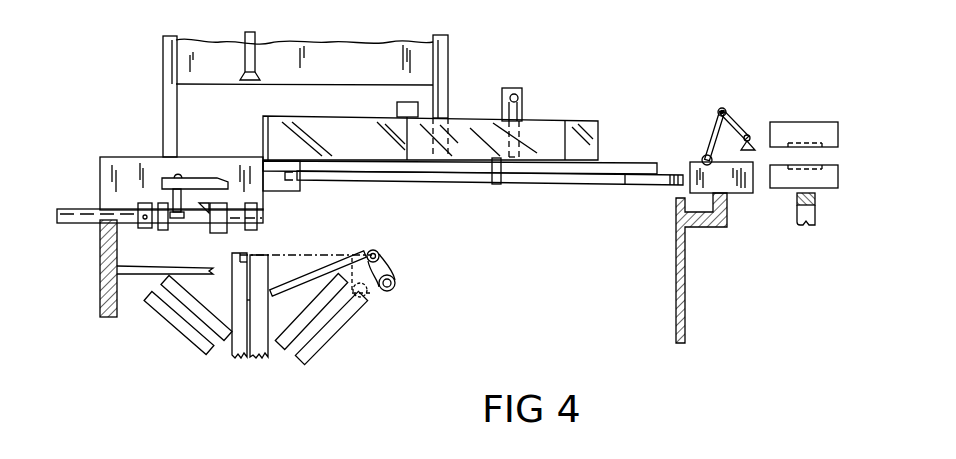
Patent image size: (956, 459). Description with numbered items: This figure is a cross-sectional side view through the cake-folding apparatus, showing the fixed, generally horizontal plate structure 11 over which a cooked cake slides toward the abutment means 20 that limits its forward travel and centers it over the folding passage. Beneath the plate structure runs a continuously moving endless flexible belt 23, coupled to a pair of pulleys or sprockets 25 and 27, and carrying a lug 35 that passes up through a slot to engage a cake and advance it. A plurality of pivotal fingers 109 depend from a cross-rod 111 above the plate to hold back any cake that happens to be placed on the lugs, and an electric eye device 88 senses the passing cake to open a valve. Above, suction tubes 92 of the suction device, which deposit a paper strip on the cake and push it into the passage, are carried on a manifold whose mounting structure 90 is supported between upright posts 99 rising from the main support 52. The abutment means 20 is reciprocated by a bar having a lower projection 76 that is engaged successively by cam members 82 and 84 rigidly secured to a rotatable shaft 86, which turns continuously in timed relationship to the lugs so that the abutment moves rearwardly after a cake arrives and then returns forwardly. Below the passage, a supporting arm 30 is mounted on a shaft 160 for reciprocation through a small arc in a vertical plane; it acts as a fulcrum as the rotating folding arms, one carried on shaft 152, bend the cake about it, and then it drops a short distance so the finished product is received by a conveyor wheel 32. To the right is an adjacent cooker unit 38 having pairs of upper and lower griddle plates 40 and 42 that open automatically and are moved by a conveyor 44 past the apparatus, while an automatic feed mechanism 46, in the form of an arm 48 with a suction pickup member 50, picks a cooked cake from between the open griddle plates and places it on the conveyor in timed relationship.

The plate structure 11 is at (622, 152).
The abutment means 20 is at (163, 172).
The endless flexible belt 23 is at (445, 180).
The pulley or sprocket 25 is at (320, 177).
The pulley or sprocket 27 is at (640, 185).
The supporting arm 30 is at (312, 270).
The conveyor wheel 32 is at (175, 333).
The lug 35 is at (498, 172).
The cooker unit 38 is at (832, 112).
The upper griddle plate 40 is at (800, 130).
The lower griddle plate 42 is at (780, 180).
The conveyor 44 is at (812, 212).
The automatic feed mechanism 46 is at (690, 158).
The arm 48 is at (719, 109).
The suction pickup member 50 is at (752, 137).
The main support 52 is at (97, 305).
The lower projection 76 is at (198, 228).
The cam member 82 is at (185, 226).
The cam member 84 is at (207, 203).
The rotatable shaft 86 is at (78, 226).
The electric eye device 88 is at (416, 108).
The frame member 90 is at (377, 73).
The suction tube 92 is at (250, 52).
The upright post 99 is at (163, 100).
The pivotal finger 109 is at (527, 153).
The cross-rod 111 is at (516, 97).
The shaft 152 is at (133, 272).
The shaft 160 is at (387, 248).